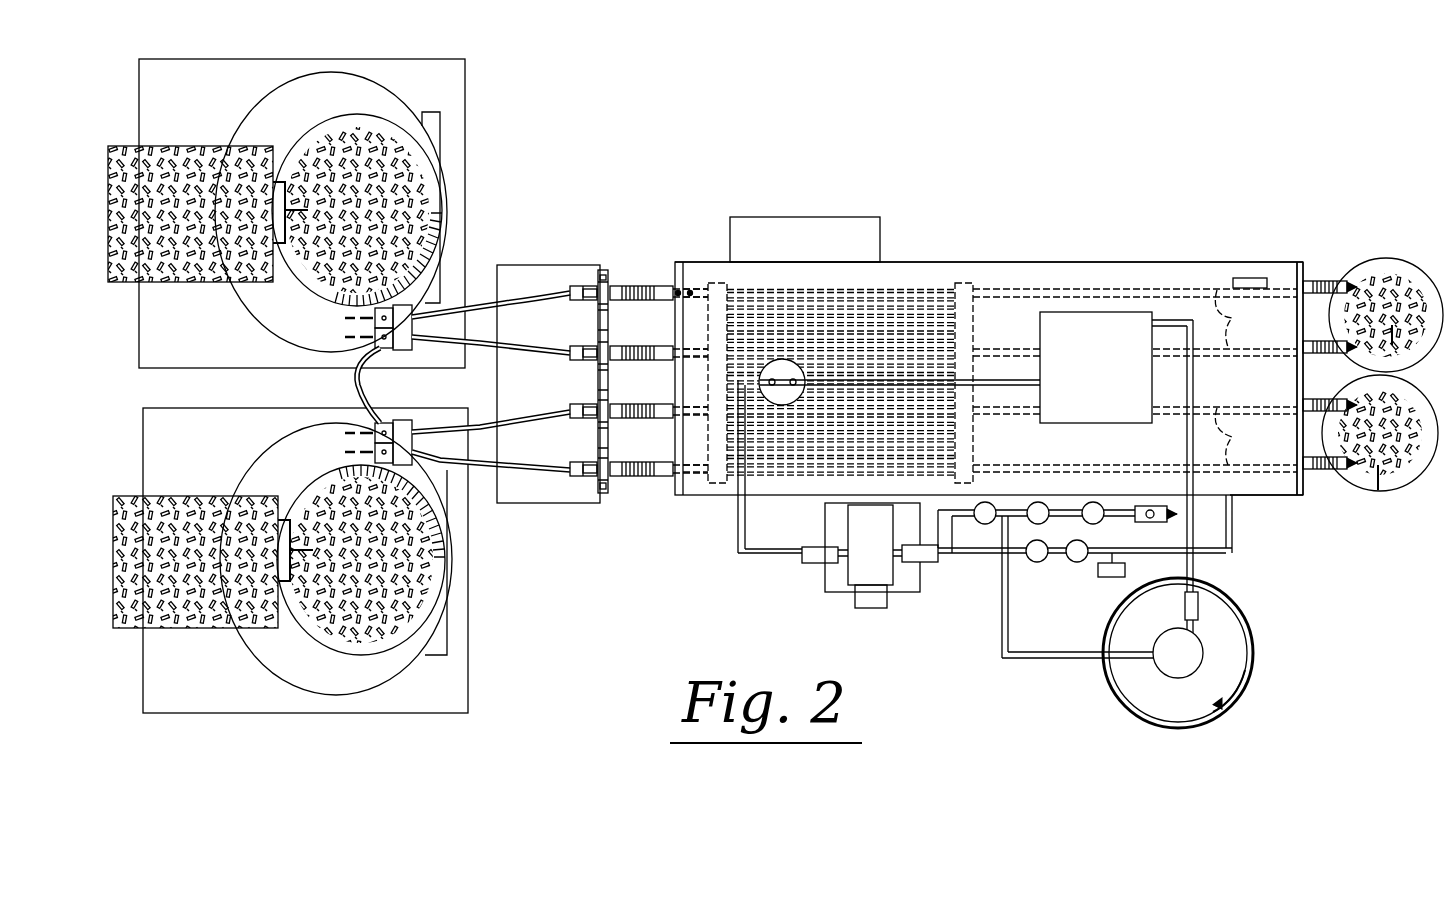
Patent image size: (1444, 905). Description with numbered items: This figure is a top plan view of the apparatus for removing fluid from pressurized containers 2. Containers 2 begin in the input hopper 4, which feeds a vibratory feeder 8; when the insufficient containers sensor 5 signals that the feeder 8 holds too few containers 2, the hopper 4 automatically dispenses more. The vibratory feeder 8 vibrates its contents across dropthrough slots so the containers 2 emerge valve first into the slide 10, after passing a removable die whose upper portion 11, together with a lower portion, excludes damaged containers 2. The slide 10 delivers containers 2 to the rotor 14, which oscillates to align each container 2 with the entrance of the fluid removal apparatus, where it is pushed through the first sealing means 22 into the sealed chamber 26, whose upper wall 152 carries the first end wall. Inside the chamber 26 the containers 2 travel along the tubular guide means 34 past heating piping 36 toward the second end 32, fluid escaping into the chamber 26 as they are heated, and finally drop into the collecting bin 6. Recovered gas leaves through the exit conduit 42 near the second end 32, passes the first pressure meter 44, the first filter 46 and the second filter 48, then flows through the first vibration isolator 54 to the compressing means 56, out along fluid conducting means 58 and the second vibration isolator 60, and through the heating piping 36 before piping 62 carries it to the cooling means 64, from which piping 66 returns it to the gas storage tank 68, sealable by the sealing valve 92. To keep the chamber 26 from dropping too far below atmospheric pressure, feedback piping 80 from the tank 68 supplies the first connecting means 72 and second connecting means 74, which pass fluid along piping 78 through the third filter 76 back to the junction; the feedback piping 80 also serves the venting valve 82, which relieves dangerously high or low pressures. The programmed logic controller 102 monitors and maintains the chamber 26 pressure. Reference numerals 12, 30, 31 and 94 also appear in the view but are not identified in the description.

The containers 2 is at (1400, 283).
The input hopper 4 is at (173, 283).
The insufficient containers sensor 5 is at (303, 207).
The collecting bin 6 is at (1395, 265).
The vibratory feeder 8 is at (350, 78).
The slide 10 is at (535, 297).
The upper portion 11 is at (357, 381).
The tumbler frame 12 is at (468, 690).
The rotor 14 is at (605, 285).
The first sealing means 22 is at (648, 507).
The sealed chamber 26 is at (940, 256).
The feed box 30 is at (570, 273).
The output stations 31 is at (1316, 265).
The second end of the sealed chamber 32 is at (1310, 258).
The guide means 34 is at (1249, 377).
The heating piping 36 is at (830, 288).
The exit conduit 42 is at (1235, 517).
The first pressure meter 44 is at (1112, 577).
The first filter 46 is at (1078, 562).
The second filter 48 is at (1035, 562).
The first vibration isolator 54 is at (923, 565).
The compressing means 56 is at (880, 608).
The fluid conducting means 58 is at (746, 530).
The second vibration isolator 60 is at (805, 563).
The piping 62 is at (1027, 380).
The cooling means 64 is at (1135, 306).
The piping 66 is at (1200, 570).
The gas storage tank 68 is at (1215, 715).
The first connecting means 72 is at (1093, 502).
The second connecting means 74 is at (1048, 502).
The third filter 76 is at (994, 503).
The piping 78 is at (990, 562).
The feedback piping 80 is at (1030, 658).
The venting valve 82 is at (1175, 517).
The sealing valve 92 is at (1200, 605).
The sensor 94 is at (1248, 278).
The programmed logic controller 102 is at (878, 199).
The upper wall 152 is at (1273, 487).